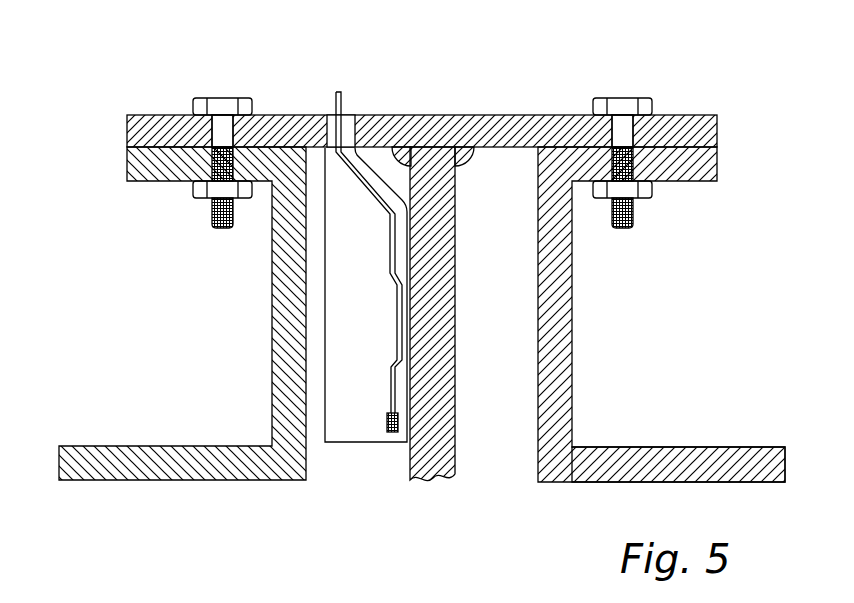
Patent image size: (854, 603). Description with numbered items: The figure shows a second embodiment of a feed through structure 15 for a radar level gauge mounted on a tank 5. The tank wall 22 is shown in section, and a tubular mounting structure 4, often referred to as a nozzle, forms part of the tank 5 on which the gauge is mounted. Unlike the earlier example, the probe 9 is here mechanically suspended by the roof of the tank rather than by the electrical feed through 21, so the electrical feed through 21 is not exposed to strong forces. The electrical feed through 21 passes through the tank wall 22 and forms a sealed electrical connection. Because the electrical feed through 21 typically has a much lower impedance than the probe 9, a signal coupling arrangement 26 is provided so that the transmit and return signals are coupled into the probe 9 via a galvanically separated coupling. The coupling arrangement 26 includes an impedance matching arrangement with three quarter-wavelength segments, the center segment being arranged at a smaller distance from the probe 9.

The tubular mounting structure 4 is at (560, 313).
The tank 5 is at (688, 447).
The probe 9 is at (443, 302).
The feed through structure 15 is at (679, 74).
The electrical feed through 21 is at (343, 115).
The tank wall 22 is at (512, 130).
The signal coupling arrangement 26 is at (385, 396).